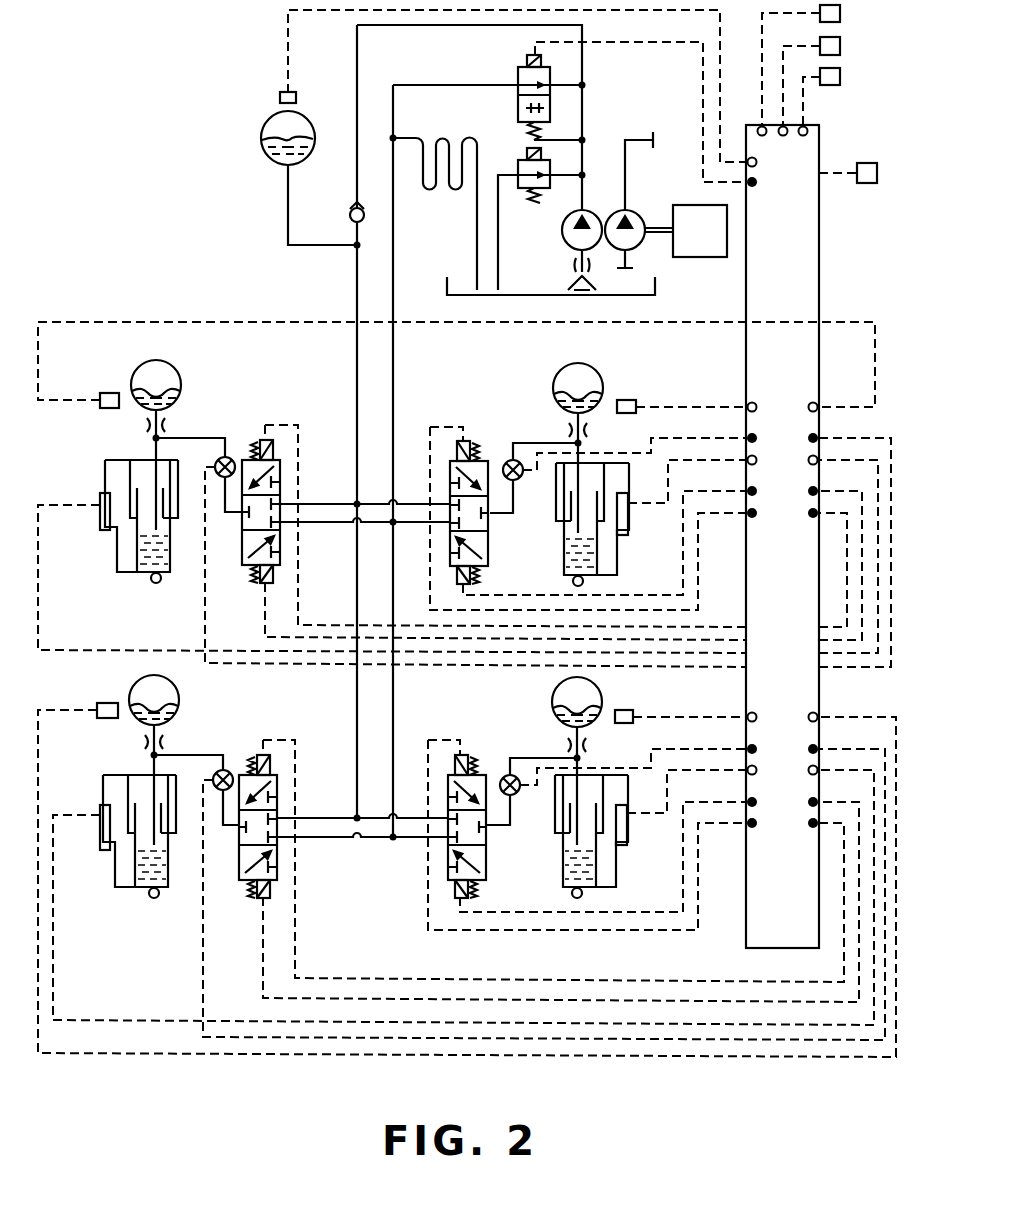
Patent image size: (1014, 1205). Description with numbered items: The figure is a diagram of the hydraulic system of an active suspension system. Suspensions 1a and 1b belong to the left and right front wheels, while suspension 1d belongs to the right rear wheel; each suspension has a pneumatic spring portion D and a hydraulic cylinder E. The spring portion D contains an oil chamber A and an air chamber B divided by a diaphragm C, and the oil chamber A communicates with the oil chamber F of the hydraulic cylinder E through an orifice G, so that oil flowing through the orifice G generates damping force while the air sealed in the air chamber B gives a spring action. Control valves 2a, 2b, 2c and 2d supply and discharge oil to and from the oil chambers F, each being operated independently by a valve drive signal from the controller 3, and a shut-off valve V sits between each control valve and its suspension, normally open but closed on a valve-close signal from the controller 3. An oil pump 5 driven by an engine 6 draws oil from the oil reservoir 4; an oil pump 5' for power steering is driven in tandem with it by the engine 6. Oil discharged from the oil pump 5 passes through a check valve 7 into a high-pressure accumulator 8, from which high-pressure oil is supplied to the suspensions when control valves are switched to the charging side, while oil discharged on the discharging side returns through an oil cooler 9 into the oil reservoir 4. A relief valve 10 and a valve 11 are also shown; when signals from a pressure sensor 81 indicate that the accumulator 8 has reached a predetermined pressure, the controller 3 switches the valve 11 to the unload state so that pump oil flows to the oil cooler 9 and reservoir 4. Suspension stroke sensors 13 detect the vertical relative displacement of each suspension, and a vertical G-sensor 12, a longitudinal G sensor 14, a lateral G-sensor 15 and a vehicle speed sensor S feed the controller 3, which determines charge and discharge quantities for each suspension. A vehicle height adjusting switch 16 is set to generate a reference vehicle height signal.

The suspension of left front wheel 1a is at (145, 590).
The suspension of right front wheel 1b is at (143, 905).
The suspension of right rear wheel 1d is at (550, 835).
The control valve 2a is at (285, 475).
The control valve 2b is at (445, 478).
The control valve 2c is at (285, 793).
The control valve 2d is at (440, 856).
The controller 3 is at (819, 291).
The oil reservoir 4 is at (520, 293).
The oil pump 5 is at (586, 214).
The oil pump for power steering 5' is at (633, 212).
The engine 6 is at (700, 257).
The check valve 7 is at (349, 214).
The high-pressure accumulator 8 is at (262, 155).
The pressure sensor 81 is at (280, 98).
The oil cooler 9 is at (443, 188).
The relief valve 10 is at (518, 170).
The valve 11 is at (518, 105).
The vertical G-sensor 12 is at (645, 688).
The suspension stroke sensor 13 is at (645, 855).
The longitudinal G sensor 14 is at (840, 46).
The lateral G-sensor 15 is at (840, 13).
The vehicle height adjusting switch 16 is at (868, 183).
The vehicle speed sensor S is at (840, 77).
The oil chamber A is at (555, 724).
The air chamber B is at (590, 692).
The diaphragm C is at (556, 702).
The pneumatic spring portion D is at (530, 695).
The hydraulic cylinder E is at (568, 870).
The oil chamber F is at (592, 870).
The orifice G is at (603, 749).
The shut-off valve V is at (490, 750).